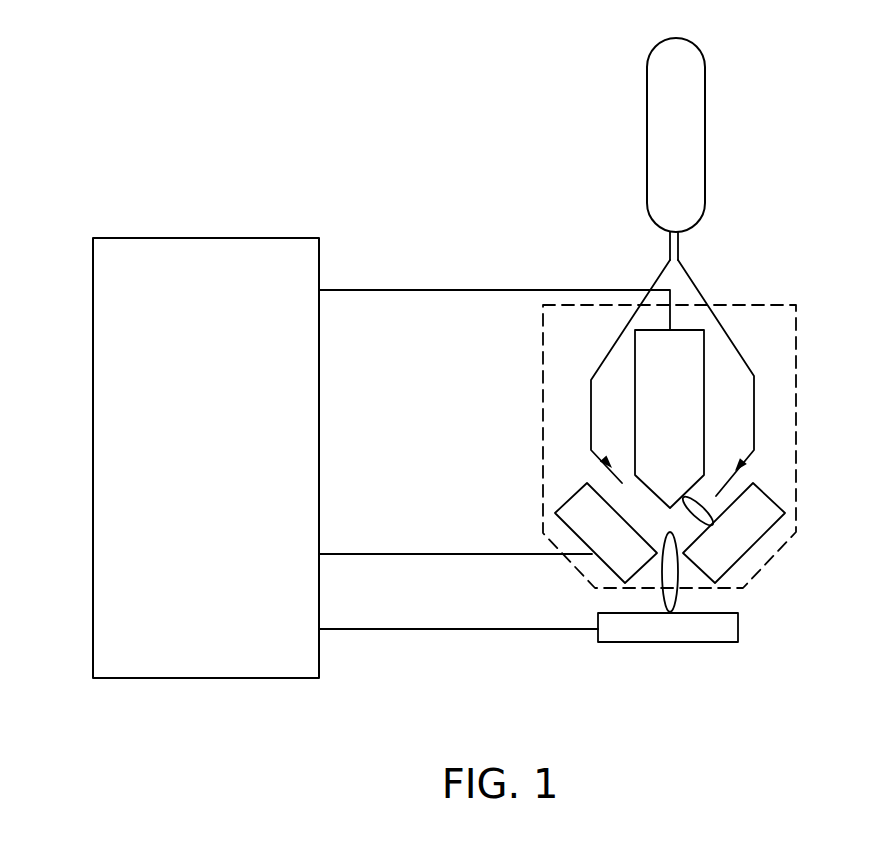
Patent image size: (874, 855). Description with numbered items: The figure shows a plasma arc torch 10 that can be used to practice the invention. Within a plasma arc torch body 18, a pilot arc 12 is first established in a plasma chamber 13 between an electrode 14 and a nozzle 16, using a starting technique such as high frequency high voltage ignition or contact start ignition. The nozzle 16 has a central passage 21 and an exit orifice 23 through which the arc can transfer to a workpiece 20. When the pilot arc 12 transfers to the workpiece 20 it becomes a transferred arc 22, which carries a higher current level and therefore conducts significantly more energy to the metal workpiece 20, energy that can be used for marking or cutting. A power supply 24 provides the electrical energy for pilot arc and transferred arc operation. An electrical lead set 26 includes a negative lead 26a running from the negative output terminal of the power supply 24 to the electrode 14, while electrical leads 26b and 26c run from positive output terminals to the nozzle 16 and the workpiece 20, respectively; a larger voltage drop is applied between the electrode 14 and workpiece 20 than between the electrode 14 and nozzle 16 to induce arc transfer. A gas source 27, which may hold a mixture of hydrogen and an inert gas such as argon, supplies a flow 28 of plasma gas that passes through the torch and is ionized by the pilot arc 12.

The plasma arc torch 10 is at (435, 255).
The pilot arc 12 is at (697, 495).
The plasma chamber 13 is at (718, 498).
The electrode 14 is at (705, 402).
The nozzle 16 is at (578, 490).
The plasma arc torch body 18 is at (583, 398).
The workpiece 20 is at (738, 625).
The central passage 21 is at (667, 533).
The transferred arc 22 is at (680, 598).
The exit orifice 23 is at (652, 567).
The power supply 24 is at (190, 238).
The electrical lead set 26 is at (494, 462).
The negative lead 26a is at (572, 290).
The electrical lead 26b is at (446, 553).
The electrical lead 26c is at (442, 629).
The gas source 27 is at (703, 102).
The flow of plasma gas 28 is at (604, 459).